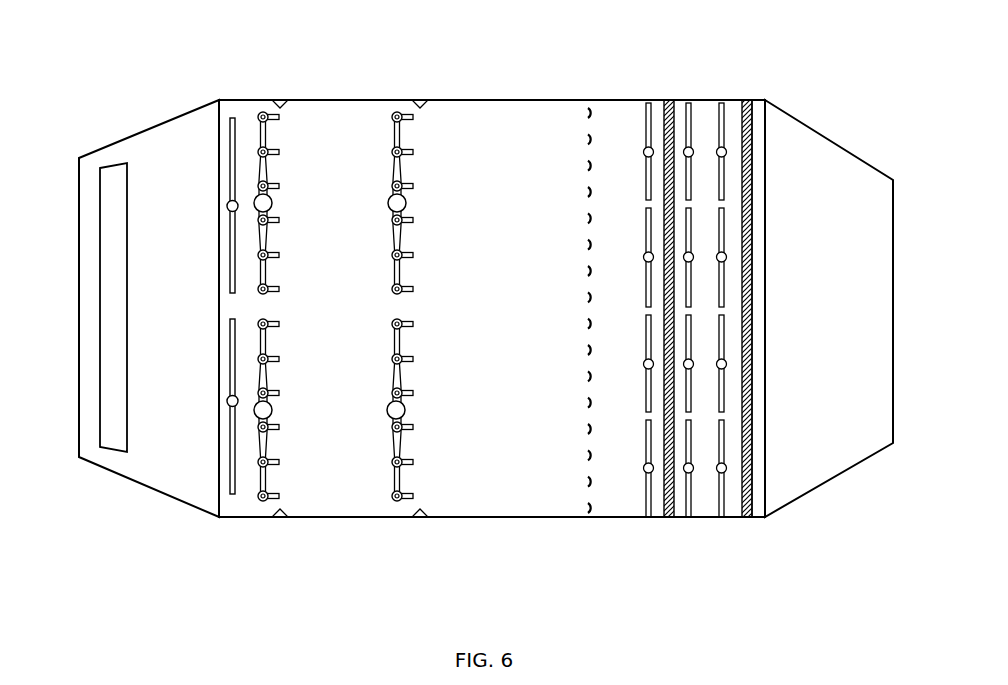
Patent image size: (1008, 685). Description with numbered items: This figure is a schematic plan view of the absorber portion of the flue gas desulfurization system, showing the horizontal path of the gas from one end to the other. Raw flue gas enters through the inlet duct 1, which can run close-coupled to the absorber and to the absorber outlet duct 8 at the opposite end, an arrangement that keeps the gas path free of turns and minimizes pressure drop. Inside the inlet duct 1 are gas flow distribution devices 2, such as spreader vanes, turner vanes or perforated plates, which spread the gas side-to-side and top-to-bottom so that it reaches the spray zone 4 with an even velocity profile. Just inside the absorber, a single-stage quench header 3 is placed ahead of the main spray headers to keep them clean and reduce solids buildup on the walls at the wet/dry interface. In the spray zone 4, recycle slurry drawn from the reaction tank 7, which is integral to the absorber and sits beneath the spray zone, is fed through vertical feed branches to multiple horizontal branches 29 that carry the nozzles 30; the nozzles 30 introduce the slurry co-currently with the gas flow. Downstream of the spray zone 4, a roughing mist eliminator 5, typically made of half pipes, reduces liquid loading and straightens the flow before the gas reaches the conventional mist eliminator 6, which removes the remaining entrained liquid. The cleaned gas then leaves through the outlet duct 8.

The inlet duct 1 is at (163, 155).
The gas flow distribution devices 2 is at (110, 357).
The quench header 3 is at (225, 118).
The spray zone 4 is at (280, 301).
The roughing mist eliminator 5 is at (588, 108).
The conventional mist eliminator 6 is at (707, 110).
The reaction tank 7 is at (535, 477).
The absorber outlet duct 8 is at (793, 142).
The horizontal branches 29 is at (402, 343).
The nozzles 30 is at (417, 427).